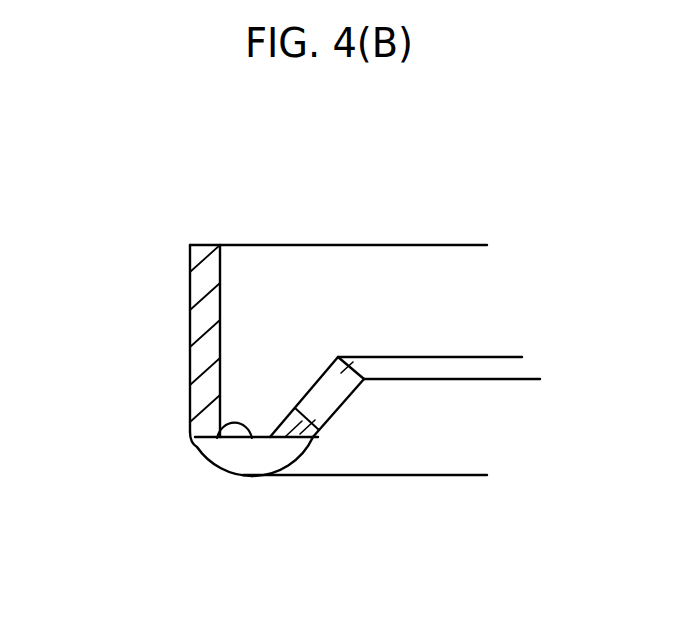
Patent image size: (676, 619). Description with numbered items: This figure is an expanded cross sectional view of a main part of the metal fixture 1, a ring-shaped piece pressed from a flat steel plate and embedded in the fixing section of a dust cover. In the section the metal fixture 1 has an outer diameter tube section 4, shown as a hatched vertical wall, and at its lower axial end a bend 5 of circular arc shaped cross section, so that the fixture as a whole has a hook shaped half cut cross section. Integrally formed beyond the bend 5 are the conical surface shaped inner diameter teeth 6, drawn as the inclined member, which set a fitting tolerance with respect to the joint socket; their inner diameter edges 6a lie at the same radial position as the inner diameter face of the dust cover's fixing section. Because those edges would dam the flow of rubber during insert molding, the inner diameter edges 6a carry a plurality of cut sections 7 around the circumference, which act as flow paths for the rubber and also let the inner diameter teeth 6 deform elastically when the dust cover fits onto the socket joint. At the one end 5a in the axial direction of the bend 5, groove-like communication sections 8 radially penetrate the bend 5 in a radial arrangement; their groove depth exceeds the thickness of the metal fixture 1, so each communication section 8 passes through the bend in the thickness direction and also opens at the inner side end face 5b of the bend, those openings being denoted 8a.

The metal fixture 1 is at (166, 247).
The outer diameter tube section 4 is at (200, 323).
The bend 5 is at (207, 460).
The one end in the axial direction of the bend 5a is at (240, 477).
The inner side end face of the bend 5b is at (222, 425).
The inner diameter teeth 6 is at (322, 430).
The inner diameter edges 6a is at (364, 379).
The cut sections 7 is at (352, 370).
The communication sections 8 is at (263, 455).
The openings 8a is at (252, 438).